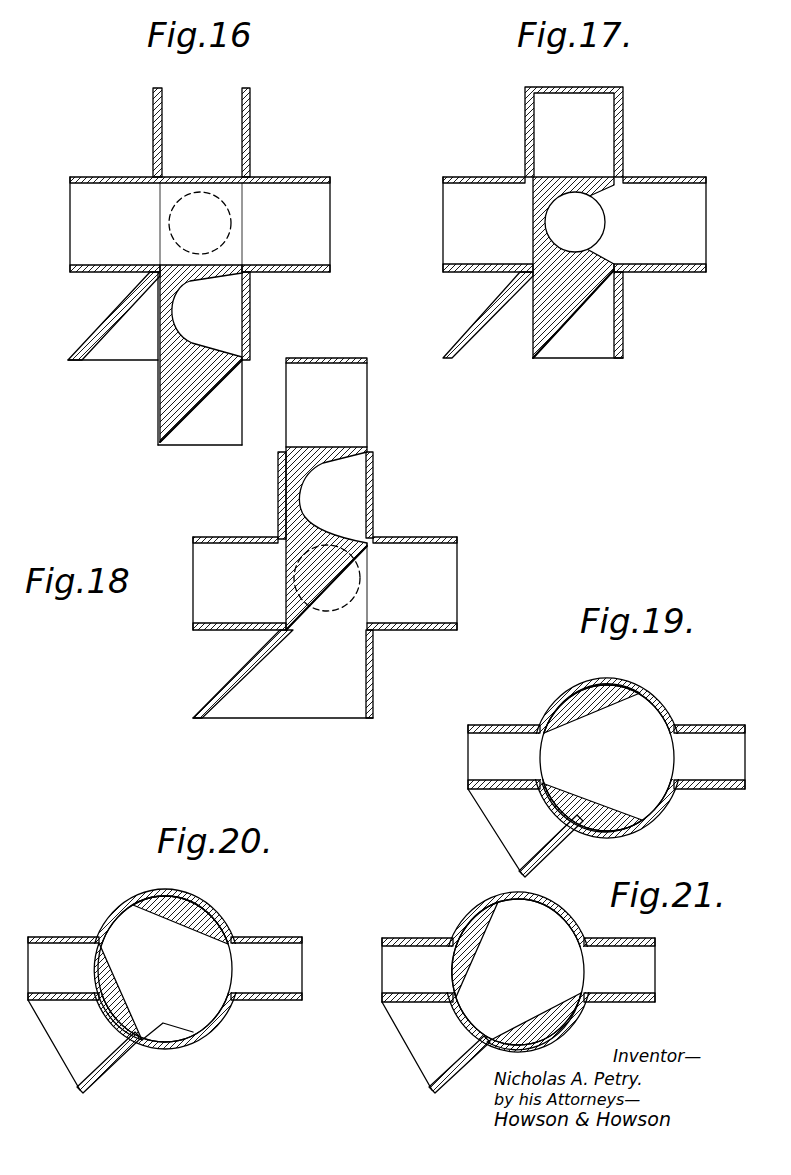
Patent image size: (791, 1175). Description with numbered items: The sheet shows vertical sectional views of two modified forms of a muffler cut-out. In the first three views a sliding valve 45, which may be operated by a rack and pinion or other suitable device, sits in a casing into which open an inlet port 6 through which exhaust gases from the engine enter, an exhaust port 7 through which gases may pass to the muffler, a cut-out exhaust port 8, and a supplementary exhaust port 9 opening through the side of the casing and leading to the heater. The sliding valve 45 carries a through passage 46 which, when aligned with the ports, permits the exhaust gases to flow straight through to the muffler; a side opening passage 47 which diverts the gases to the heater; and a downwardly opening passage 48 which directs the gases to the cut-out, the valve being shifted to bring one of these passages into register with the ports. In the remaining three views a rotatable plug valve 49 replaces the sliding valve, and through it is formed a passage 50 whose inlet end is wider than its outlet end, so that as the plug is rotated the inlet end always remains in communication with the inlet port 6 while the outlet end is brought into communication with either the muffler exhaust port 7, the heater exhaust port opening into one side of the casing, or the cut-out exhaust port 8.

In FIG. 16, the inlet port 6 is at (283, 226).
In FIG. 17, the inlet port 6 is at (658, 222).
In FIG. 18, the inlet port 6 is at (421, 584).
In FIG. 19, the inlet port 6 is at (709, 757).
In FIG. 20, the inlet port 6 is at (266, 968).
In FIG. 21, the inlet port 6 is at (619, 970).
In FIG. 16, the exhaust port 7 is at (111, 224).
In FIG. 17, the exhaust port 7 is at (486, 224).
In FIG. 18, the exhaust port 7 is at (231, 584).
In FIG. 19, the exhaust port 7 is at (504, 757).
In FIG. 20, the exhaust port 7 is at (63, 968).
In FIG. 21, the exhaust port 7 is at (417, 970).
In FIG. 16, the cut-out exhaust port 8 is at (114, 316).
In FIG. 17, the cut-out exhaust port 8 is at (488, 315).
In FIG. 18, the cut-out exhaust port 8 is at (283, 674).
In FIG. 19, the cut-out exhaust port 8 is at (525, 833).
In FIG. 20, the cut-out exhaust port 8 is at (84, 1046).
In FIG. 21, the cut-out exhaust port 8 is at (436, 1047).
In FIG. 16, the supplementary exhaust port 9 is at (200, 223).
In FIG. 17, the supplementary exhaust port 9 is at (575, 222).
In FIG. 18, the supplementary exhaust port 9 is at (367, 575).
In FIG. 16, the sliding valve 45 is at (190, 177).
In FIG. 17, the sliding valve 45 is at (580, 93).
In FIG. 18, the sliding valve 45 is at (324, 358).
In FIG. 16, the through passage 46 is at (236, 251).
In FIG. 17, the through passage 46 is at (573, 155).
In FIG. 18, the through passage 46 is at (322, 402).
In FIG. 16, the side opening passage 47 is at (201, 353).
In FIG. 17, the side opening passage 47 is at (608, 250).
In FIG. 18, the side opening passage 47 is at (326, 538).
In FIG. 16, the downwardly opening passage 48 is at (201, 401).
In FIG. 17, the downwardly opening passage 48 is at (573, 314).
In FIG. 18, the downwardly opening passage 48 is at (326, 589).
In FIG. 19, the rotatable plug valve 49 is at (598, 690).
In FIG. 20, the rotatable plug valve 49 is at (202, 907).
In FIG. 21, the rotatable plug valve 49 is at (458, 940).
In FIG. 19, the passage 50 is at (607, 758).
In FIG. 20, the passage 50 is at (165, 969).
In FIG. 21, the passage 50 is at (518, 972).